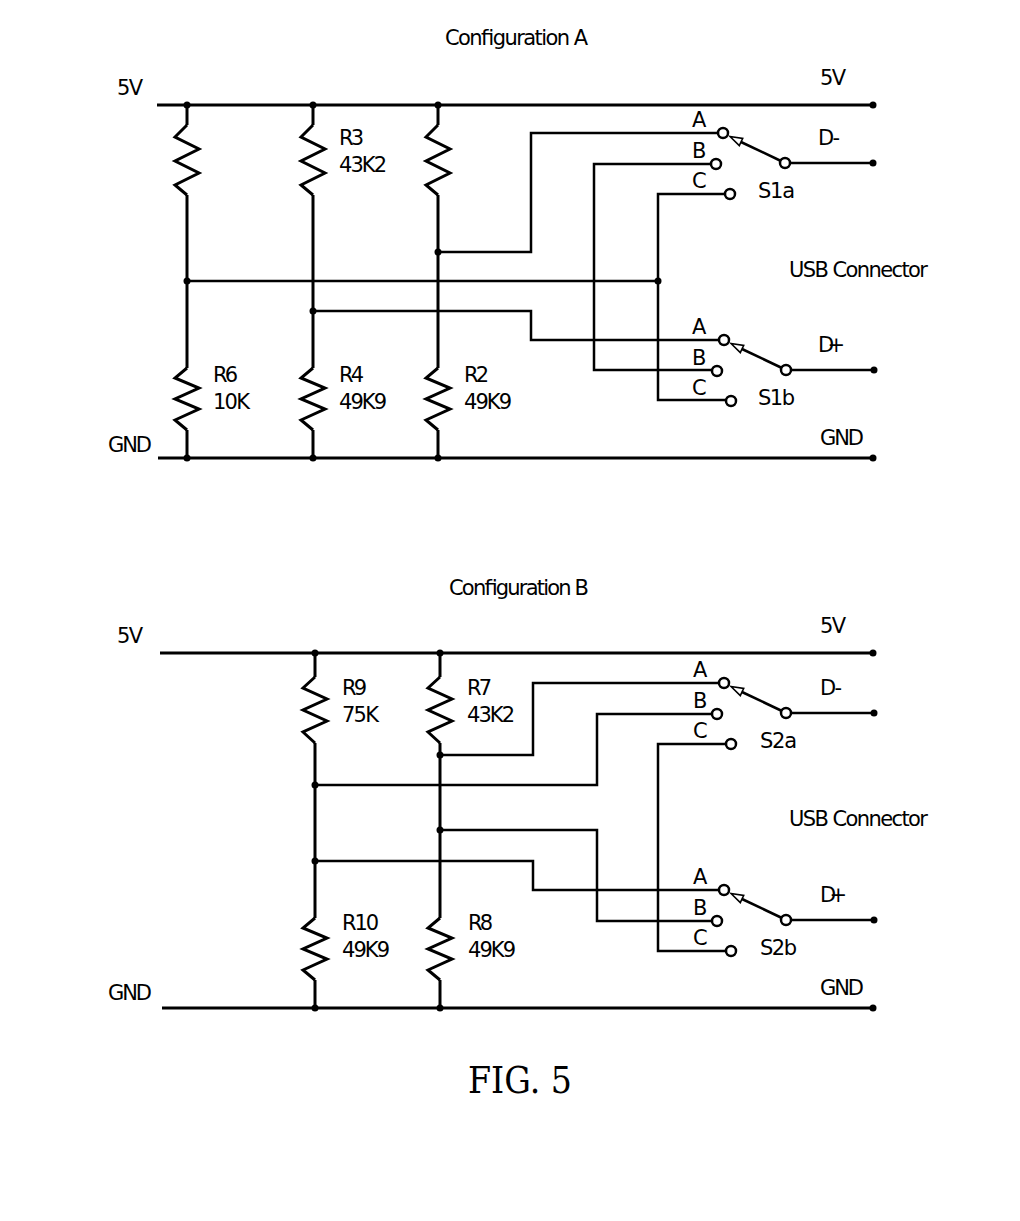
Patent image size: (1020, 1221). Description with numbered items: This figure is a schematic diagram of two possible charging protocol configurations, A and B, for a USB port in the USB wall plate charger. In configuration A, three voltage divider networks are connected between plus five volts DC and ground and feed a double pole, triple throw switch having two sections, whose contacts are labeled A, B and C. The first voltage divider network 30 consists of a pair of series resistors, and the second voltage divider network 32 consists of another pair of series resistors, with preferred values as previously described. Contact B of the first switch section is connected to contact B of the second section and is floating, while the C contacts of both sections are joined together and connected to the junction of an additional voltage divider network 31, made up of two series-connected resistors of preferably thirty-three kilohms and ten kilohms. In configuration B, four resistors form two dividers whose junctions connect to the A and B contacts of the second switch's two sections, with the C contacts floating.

The first voltage divider network 30 is at (297, 77).
The additional voltage divider network 31 is at (163, 185).
The second voltage divider network 32 is at (438, 95).